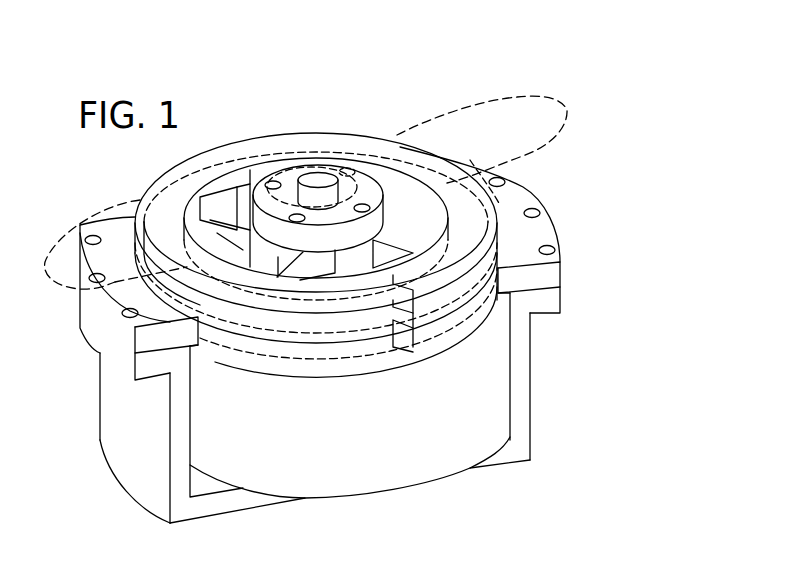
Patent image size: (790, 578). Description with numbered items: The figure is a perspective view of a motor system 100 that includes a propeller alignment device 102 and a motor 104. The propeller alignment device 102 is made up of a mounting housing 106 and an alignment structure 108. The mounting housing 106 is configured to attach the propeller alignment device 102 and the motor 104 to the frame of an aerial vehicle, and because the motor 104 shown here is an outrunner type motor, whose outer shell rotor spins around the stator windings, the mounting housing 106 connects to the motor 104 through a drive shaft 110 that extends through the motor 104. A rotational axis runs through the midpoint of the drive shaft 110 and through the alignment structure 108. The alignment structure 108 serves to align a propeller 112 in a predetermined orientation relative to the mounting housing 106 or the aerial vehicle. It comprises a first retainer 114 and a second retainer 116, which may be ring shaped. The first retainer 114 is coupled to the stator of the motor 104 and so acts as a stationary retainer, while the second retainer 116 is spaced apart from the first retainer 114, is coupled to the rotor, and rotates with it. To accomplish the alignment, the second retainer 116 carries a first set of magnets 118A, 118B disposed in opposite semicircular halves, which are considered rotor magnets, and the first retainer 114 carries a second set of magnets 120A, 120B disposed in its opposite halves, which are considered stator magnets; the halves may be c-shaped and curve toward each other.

The motor system 100 is at (396, 84).
The propeller alignment device 102 is at (590, 283).
The motor 104 is at (414, 486).
The mounting housing 106 is at (523, 437).
The alignment structure 108 is at (598, 210).
The drive shaft 110 is at (313, 173).
The propeller 112 is at (520, 97).
The first retainer 114 is at (143, 338).
The second retainer 116 is at (270, 312).
The first set of magnets (rotor magnet) 118A is at (470, 160).
The first set of magnets (rotor magnet) 118B is at (153, 190).
The second set of magnets (stator magnet) 120A is at (437, 345).
The second set of magnets (stator magnet) 120B is at (353, 355).